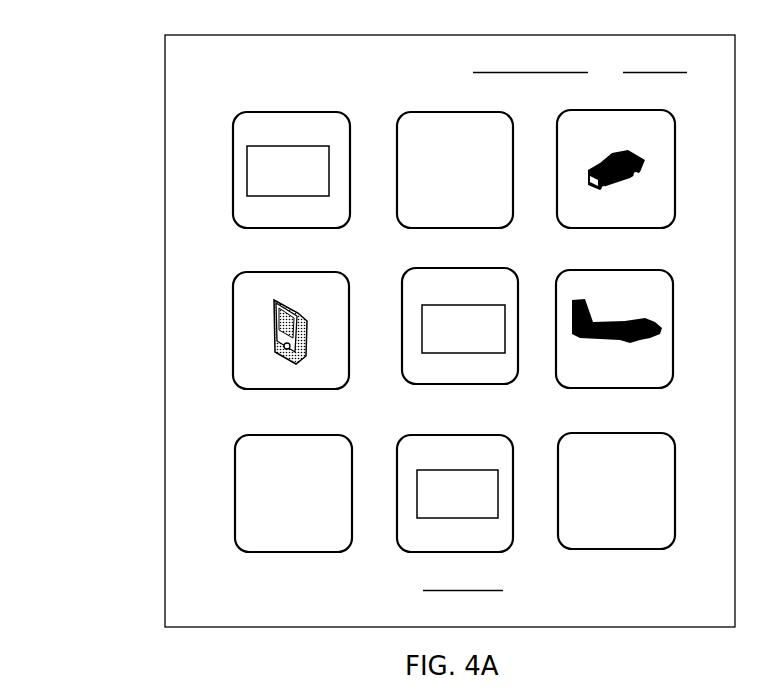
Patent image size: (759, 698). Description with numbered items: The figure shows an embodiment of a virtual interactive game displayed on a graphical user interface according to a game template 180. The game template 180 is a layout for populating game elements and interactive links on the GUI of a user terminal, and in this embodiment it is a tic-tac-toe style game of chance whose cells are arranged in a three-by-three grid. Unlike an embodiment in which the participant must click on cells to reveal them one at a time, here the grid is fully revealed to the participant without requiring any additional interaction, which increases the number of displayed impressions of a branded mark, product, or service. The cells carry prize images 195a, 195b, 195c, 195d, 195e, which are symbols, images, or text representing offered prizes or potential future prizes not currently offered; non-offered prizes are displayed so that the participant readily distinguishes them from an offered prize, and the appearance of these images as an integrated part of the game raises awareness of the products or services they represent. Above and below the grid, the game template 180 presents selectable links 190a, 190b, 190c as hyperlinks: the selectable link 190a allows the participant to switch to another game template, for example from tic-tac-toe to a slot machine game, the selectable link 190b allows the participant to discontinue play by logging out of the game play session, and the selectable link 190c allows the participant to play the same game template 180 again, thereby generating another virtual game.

The game template 180 is at (160, 137).
The selectable link 190a is at (547, 52).
The selectable link 190b is at (662, 52).
The selectable link 190c is at (517, 593).
The prize image 195a is at (307, 156).
The prize image 195b is at (458, 143).
The prize image 195c is at (660, 150).
The prize image 195d is at (300, 305).
The prize image 195e is at (628, 315).